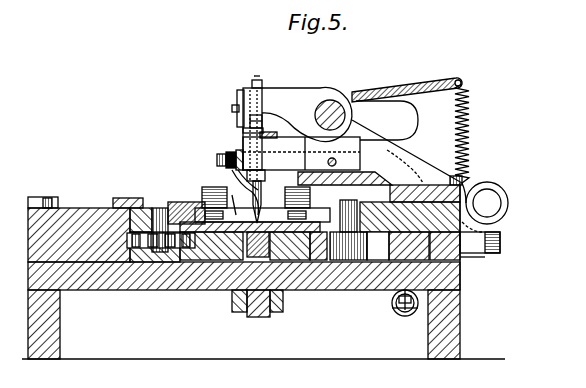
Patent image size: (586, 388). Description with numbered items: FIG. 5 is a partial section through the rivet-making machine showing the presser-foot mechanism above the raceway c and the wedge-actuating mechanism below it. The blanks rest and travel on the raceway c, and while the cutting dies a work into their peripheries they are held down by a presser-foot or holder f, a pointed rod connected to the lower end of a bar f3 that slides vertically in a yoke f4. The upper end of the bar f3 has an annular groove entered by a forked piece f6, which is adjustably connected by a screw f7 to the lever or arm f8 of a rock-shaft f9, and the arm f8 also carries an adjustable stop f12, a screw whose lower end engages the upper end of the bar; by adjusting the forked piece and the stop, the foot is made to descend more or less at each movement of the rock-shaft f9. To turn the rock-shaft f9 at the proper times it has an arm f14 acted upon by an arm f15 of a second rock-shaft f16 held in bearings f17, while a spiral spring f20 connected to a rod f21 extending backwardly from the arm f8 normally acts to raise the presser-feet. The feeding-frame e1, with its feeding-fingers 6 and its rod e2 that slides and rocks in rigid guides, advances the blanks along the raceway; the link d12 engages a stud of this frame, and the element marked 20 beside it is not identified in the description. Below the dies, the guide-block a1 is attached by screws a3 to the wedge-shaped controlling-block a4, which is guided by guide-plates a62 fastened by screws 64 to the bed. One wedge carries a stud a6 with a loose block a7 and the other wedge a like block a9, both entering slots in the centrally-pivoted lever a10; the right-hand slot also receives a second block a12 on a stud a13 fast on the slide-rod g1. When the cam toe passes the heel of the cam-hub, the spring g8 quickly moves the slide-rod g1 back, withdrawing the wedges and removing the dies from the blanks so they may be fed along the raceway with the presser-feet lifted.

The screws 64 is at (115, 196).
The nut 20 is at (217, 160).
The feeding-finger 6 is at (232, 205).
The cutting die a is at (208, 193).
The guide-block a1 is at (185, 162).
The screws a3 is at (165, 210).
The controlling-block a4 is at (118, 282).
The stud a6 is at (158, 208).
The loose block a7 is at (140, 265).
The block a9 is at (176, 265).
The centrally-pivoted lever a10 is at (490, 243).
The second block a12 is at (466, 260).
The stud a13 is at (462, 275).
The guide-plate a62 is at (395, 186).
The raceway c is at (216, 282).
The link d12 is at (230, 165).
The feeding-frame e1 is at (230, 153).
The rod e2 is at (339, 157).
The presser-foot f is at (260, 219).
The bar f3 is at (252, 130).
The yoke f4 is at (265, 138).
The forked piece f6 is at (237, 100).
The screw f7 is at (232, 109).
The arm f8 is at (294, 92).
The rock-shaft f9 is at (335, 104).
The adjustable stop f12 is at (257, 80).
The arm f14 is at (418, 122).
The arm f15 is at (426, 156).
The rock-shaft f16 is at (503, 192).
The bearings f17 is at (494, 204).
The spiral spring f20 is at (472, 128).
The rod f21 is at (411, 86).
The slide-rod g1 is at (462, 290).
The spring g8 is at (405, 316).